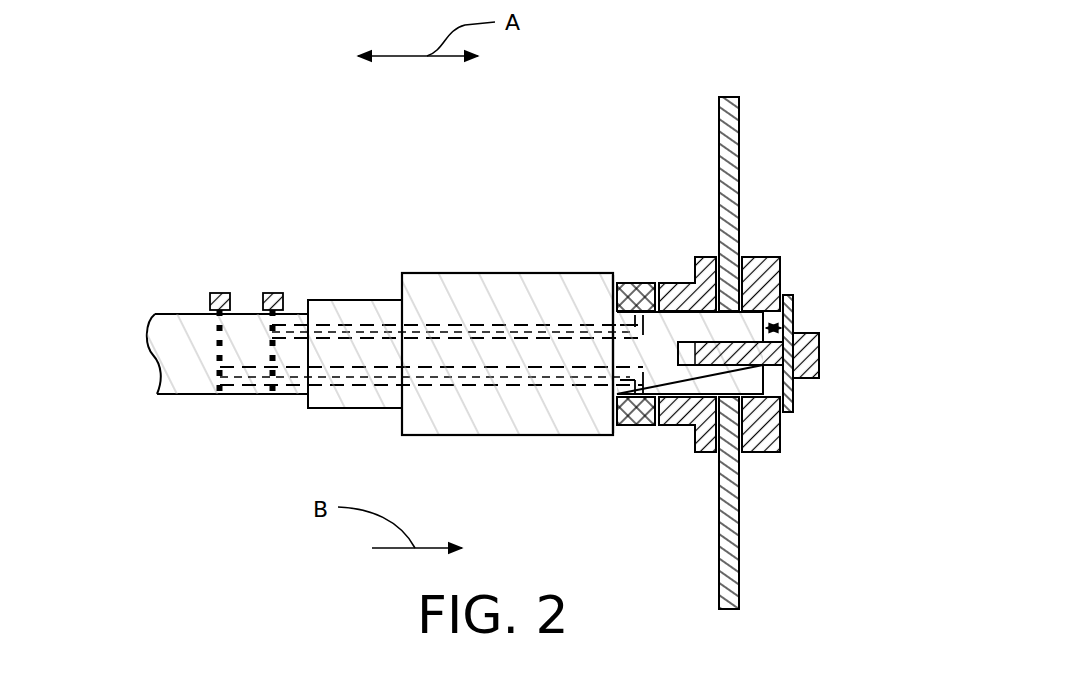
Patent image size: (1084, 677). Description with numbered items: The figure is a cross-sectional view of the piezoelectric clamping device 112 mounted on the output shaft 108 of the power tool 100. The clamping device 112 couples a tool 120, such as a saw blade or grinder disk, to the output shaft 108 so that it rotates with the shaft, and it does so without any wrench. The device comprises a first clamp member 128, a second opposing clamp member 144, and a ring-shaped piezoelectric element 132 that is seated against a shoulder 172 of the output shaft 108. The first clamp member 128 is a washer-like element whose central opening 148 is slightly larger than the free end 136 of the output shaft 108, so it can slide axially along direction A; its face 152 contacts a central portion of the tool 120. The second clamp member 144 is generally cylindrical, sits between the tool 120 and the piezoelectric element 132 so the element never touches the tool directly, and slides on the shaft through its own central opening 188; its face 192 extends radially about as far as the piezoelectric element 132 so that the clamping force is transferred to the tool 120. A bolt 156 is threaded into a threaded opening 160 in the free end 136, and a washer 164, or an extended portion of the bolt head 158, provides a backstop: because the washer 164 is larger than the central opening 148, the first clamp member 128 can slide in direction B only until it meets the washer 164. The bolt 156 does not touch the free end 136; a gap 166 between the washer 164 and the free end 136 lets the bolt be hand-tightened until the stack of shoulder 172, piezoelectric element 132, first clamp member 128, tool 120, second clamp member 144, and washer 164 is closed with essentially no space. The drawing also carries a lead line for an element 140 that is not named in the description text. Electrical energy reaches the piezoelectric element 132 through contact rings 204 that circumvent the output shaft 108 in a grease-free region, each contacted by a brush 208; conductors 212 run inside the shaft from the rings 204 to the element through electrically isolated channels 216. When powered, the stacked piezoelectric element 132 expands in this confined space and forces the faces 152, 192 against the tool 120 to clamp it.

The power tool 100 is at (262, 157).
The output shaft 108 is at (172, 314).
The clamping device 112 is at (774, 95).
The tool 120 is at (752, 328).
The first clamp member 128 is at (763, 257).
The piezoelectric element 132 is at (622, 280).
The free end 136 is at (717, 382).
The first shaft portion 140 is at (739, 152).
The second clamp member 144 is at (688, 347).
The central opening 148 is at (774, 377).
The face 152 is at (730, 440).
The bolt 156 is at (820, 347).
The bolt head 158 is at (817, 366).
The threaded opening 160 is at (683, 284).
The washer 164 is at (789, 295).
The gap 166 is at (780, 320).
The shoulder 172 is at (613, 295).
The central opening 188 is at (680, 380).
The face 192 is at (722, 276).
The contact rings 204 is at (273, 343).
The brush 208 is at (222, 292).
The conductors 212 is at (332, 318).
The channels 216 is at (427, 312).